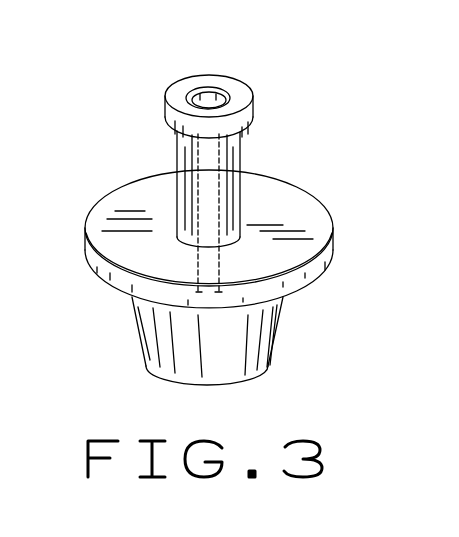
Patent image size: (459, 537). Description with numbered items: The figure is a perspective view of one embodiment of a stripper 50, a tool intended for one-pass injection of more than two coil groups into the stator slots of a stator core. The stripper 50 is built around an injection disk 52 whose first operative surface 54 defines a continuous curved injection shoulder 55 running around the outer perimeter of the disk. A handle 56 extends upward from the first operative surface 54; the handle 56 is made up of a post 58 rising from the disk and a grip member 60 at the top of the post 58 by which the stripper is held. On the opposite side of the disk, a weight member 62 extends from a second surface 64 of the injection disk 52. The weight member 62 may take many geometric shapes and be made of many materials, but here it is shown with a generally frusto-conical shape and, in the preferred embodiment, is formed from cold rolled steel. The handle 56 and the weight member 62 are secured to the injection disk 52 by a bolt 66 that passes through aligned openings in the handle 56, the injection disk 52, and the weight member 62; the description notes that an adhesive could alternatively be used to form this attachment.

The stripper 50 is at (215, 203).
The injection disk 52 is at (215, 244).
The first operative surface 54 is at (127, 211).
The continuous curved injection shoulder 55 is at (337, 253).
The handle 56 is at (211, 79).
The post 58 is at (177, 154).
The grip member 60 is at (165, 107).
The weight member 62 is at (211, 341).
The second surface 64 is at (131, 300).
The bolt 66 is at (212, 90).